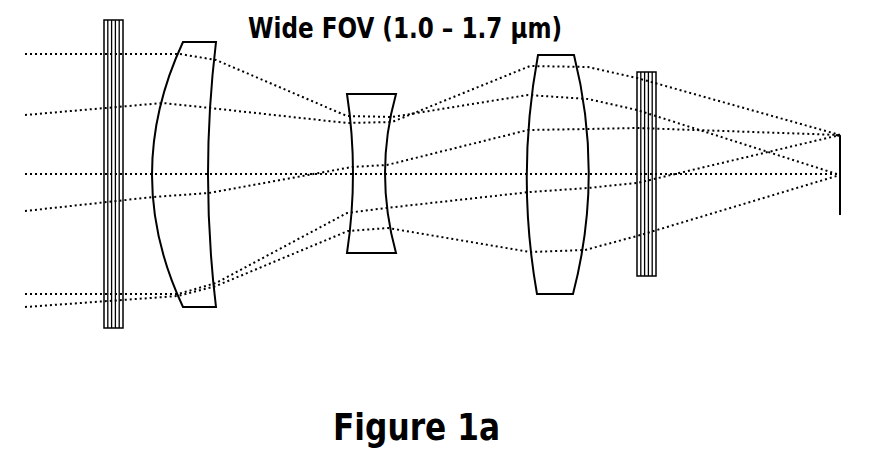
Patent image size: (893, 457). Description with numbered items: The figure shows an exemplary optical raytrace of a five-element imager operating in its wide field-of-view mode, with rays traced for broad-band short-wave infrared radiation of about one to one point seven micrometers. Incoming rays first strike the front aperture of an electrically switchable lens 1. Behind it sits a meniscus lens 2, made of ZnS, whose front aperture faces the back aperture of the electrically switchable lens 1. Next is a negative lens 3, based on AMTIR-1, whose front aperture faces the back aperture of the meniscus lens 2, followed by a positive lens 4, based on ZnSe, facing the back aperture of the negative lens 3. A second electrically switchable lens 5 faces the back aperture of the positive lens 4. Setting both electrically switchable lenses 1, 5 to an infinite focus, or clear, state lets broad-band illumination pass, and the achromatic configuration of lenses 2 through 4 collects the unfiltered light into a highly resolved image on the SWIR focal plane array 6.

The electrically switchable lens 1 is at (100, 326).
The meniscus lens 2 is at (187, 308).
The negative lens 3 is at (360, 255).
The positive lens 4 is at (540, 295).
The electrically switchable lens 5 is at (637, 277).
The SWIR focal plane array 6 is at (840, 217).